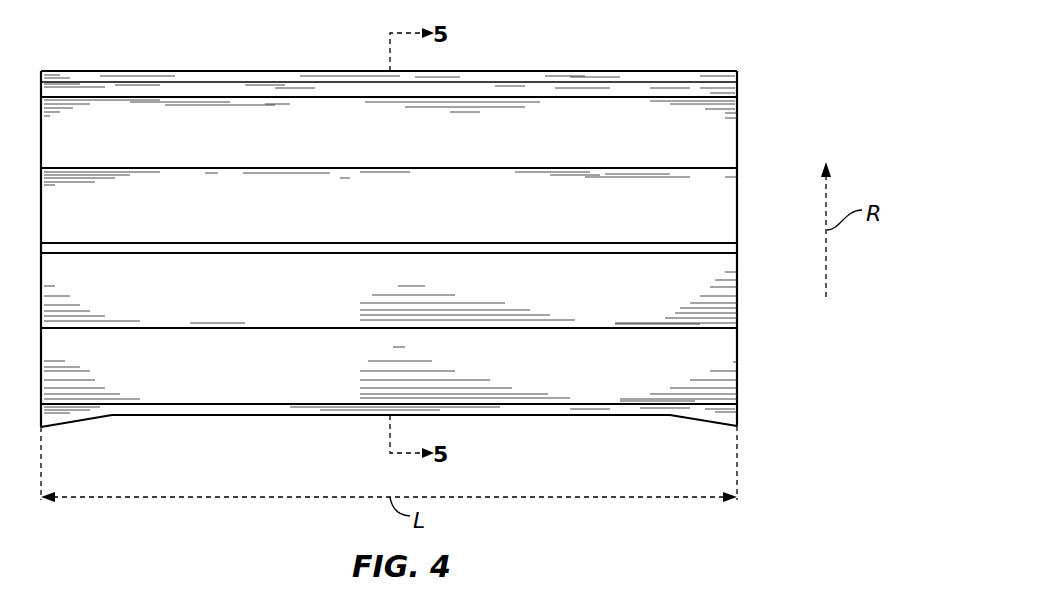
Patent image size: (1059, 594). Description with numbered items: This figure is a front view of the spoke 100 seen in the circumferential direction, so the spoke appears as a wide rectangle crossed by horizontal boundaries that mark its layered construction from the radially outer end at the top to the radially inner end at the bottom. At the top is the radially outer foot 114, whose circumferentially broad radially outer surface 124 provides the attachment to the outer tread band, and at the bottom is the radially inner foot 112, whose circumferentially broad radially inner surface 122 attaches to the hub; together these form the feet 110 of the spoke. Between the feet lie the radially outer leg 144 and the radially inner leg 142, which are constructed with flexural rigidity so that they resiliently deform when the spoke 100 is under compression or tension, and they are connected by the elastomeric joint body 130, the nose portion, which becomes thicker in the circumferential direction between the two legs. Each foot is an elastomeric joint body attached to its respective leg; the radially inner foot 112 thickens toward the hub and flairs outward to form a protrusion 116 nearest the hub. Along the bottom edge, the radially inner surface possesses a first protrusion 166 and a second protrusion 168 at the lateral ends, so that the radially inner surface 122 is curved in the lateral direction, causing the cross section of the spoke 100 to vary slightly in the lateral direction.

The spoke 100 is at (676, 40).
The feet 110 is at (717, 77).
The radially inner foot 112 is at (497, 410).
The radially outer foot 114 is at (92, 88).
The protrusion 116 is at (725, 386).
The radially inner surface 122 is at (248, 417).
The radially outer surface 124 is at (133, 71).
The joint body 130 is at (725, 268).
The radially inner leg 142 is at (725, 342).
The radially outer leg 144 is at (725, 155).
The first protrusion 166 is at (725, 413).
The second protrusion 168 is at (67, 415).